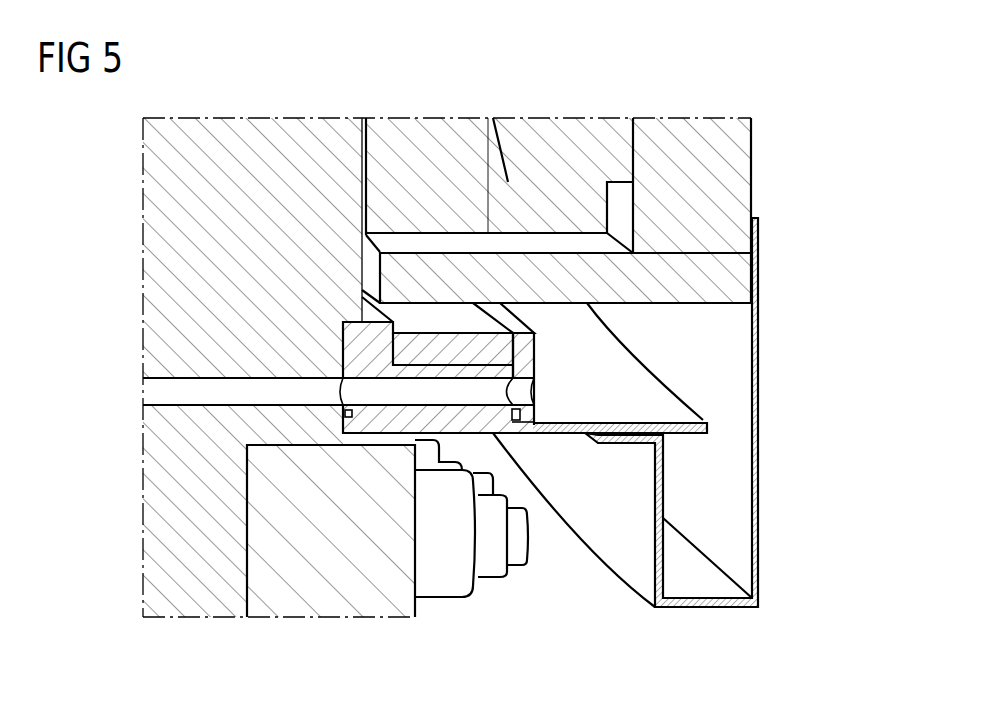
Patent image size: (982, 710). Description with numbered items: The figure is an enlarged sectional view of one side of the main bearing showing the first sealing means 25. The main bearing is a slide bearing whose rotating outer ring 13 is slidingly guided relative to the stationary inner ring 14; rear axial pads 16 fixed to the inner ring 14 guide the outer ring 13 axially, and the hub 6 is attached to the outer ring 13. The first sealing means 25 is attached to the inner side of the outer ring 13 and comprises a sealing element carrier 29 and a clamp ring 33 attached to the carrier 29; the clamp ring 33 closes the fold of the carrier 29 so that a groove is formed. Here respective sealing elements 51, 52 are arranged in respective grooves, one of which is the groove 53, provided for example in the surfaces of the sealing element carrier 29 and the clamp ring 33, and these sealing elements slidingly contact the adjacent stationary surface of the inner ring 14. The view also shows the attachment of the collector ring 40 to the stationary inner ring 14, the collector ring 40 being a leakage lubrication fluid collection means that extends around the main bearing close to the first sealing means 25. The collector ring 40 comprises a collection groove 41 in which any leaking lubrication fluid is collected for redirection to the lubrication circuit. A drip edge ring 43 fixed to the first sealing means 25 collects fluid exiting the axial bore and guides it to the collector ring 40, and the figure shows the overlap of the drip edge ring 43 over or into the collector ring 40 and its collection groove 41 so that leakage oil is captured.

The hub 6 is at (278, 602).
The outer ring 13 is at (272, 127).
The inner ring 14 is at (711, 132).
The rear axial pads 16 is at (532, 127).
The first sealing means 25 is at (373, 440).
The sealing element carrier 29 is at (353, 343).
The clamp ring 33 is at (521, 347).
The collector ring 40 is at (760, 250).
The collection groove 41 is at (707, 608).
The drip edge ring 43 is at (660, 398).
The sealing element 51 is at (343, 418).
The sealing element 52 is at (517, 418).
The groove 53 is at (347, 418).